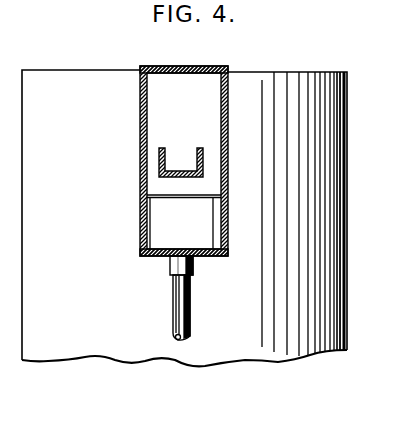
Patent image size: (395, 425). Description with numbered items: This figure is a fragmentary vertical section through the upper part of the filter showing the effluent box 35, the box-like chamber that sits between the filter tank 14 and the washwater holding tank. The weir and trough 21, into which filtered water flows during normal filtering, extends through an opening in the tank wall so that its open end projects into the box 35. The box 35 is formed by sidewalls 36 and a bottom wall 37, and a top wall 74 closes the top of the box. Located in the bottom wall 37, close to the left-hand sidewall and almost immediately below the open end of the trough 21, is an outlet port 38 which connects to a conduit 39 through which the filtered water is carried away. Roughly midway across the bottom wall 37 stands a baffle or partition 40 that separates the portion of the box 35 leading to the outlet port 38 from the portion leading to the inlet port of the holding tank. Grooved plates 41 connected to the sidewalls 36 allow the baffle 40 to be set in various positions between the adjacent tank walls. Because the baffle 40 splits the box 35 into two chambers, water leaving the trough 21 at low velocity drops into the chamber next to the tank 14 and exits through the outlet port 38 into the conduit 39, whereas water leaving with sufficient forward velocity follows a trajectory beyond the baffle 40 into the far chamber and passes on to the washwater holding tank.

The filter tank 14 is at (349, 220).
The weir and trough 21 is at (170, 156).
The effluent box 35 is at (207, 192).
The sidewalls 36 is at (140, 152).
The bottom wall 37 is at (162, 258).
The outlet port 38 is at (197, 265).
The conduit 39 is at (192, 330).
The baffle or partition 40 is at (203, 197).
The grooved plates 41 is at (212, 228).
The top wall 74 is at (198, 67).